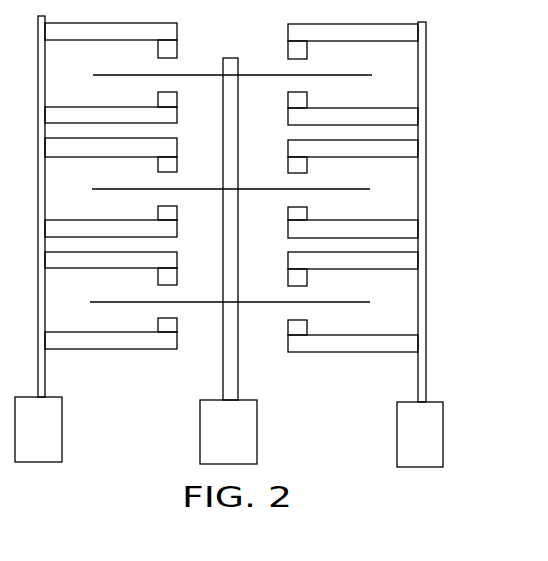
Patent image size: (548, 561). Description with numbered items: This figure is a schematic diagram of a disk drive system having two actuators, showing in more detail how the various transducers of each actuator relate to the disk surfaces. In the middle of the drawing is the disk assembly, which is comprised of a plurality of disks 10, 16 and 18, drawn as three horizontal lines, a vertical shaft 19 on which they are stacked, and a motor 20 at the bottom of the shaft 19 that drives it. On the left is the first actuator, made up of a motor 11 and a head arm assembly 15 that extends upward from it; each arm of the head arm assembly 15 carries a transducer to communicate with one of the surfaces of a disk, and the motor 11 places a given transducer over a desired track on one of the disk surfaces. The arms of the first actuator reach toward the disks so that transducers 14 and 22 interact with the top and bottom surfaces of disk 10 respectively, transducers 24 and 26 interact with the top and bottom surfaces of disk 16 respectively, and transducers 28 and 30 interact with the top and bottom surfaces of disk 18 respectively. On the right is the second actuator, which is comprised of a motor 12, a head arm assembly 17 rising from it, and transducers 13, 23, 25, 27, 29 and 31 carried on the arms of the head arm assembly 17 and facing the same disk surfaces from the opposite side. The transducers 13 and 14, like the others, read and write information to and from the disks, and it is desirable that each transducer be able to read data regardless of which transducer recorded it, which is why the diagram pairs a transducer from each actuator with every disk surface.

The disk 10 is at (110, 75).
The motor 11 is at (38, 429).
The motor 12 is at (420, 434).
The transducer 13 is at (296, 48).
The transducer 14 is at (170, 48).
The head arm assembly 15 is at (45, 371).
The disk 16 is at (100, 189).
The head arm assembly 17 is at (418, 375).
The disk 18 is at (100, 302).
The shaft 19 is at (238, 373).
The motor 20 is at (228, 432).
The transducer 22 is at (168, 98).
The transducer 23 is at (296, 99).
The transducer 24 is at (168, 161).
The transducer 25 is at (296, 166).
The transducer 26 is at (168, 212).
The transducer 27 is at (296, 213).
The transducer 28 is at (168, 275).
The transducer 29 is at (296, 278).
The transducer 30 is at (168, 326).
The transducer 31 is at (296, 328).